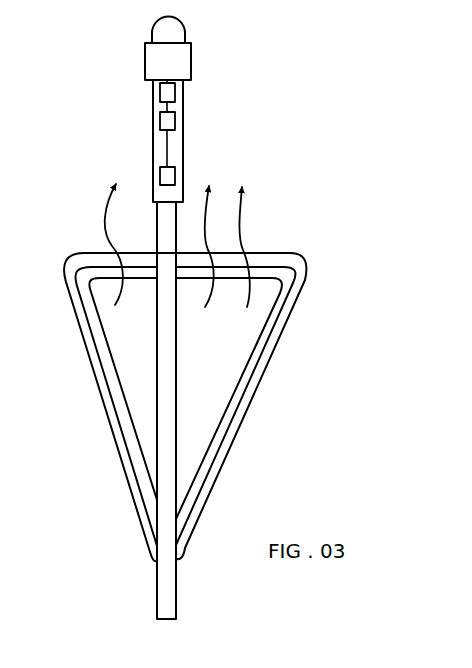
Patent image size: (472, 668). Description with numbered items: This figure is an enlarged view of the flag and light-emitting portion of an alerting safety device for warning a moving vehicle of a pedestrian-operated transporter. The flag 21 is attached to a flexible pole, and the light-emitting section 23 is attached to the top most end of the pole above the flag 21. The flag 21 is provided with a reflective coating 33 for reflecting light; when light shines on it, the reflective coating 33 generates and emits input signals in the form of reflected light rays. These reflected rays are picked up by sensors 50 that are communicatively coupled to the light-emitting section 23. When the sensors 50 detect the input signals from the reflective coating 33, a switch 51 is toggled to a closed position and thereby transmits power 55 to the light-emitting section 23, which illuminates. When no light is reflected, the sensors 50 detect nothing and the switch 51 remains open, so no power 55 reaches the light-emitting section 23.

The flag 21 is at (268, 218).
The light-emitting section 23 is at (220, 111).
The reflective coating 33 is at (127, 344).
The sensors 50 is at (162, 93).
The switch 51 is at (162, 124).
The power 55 is at (174, 177).